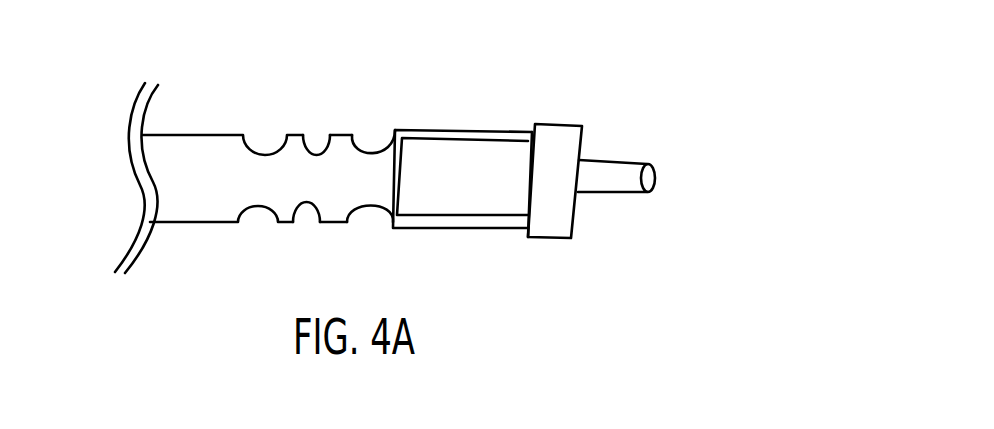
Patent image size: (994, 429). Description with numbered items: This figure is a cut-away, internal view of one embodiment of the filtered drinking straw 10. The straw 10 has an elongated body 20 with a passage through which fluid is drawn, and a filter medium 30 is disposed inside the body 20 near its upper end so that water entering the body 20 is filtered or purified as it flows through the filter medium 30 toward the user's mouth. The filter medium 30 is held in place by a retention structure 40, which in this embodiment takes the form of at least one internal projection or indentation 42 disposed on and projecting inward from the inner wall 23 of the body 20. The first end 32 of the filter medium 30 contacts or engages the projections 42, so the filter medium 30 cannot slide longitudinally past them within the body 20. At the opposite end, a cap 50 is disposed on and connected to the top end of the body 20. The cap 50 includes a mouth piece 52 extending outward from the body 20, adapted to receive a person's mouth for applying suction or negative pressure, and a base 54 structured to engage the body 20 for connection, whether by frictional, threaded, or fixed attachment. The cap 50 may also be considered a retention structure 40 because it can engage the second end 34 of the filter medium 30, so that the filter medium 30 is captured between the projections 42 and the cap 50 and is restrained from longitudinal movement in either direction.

The filtered drinking straw 10 is at (556, 67).
The body 20 is at (195, 132).
The inner wall 23 is at (320, 153).
The retention structure 40 is at (440, 170).
The internal projection 42 is at (372, 148).
The filter medium 30 is at (475, 188).
The first end of filter medium 32 is at (400, 177).
The second end of filter 34 is at (527, 162).
The cap 50 is at (603, 122).
The mouth piece 52 is at (615, 193).
The base 54 is at (577, 222).